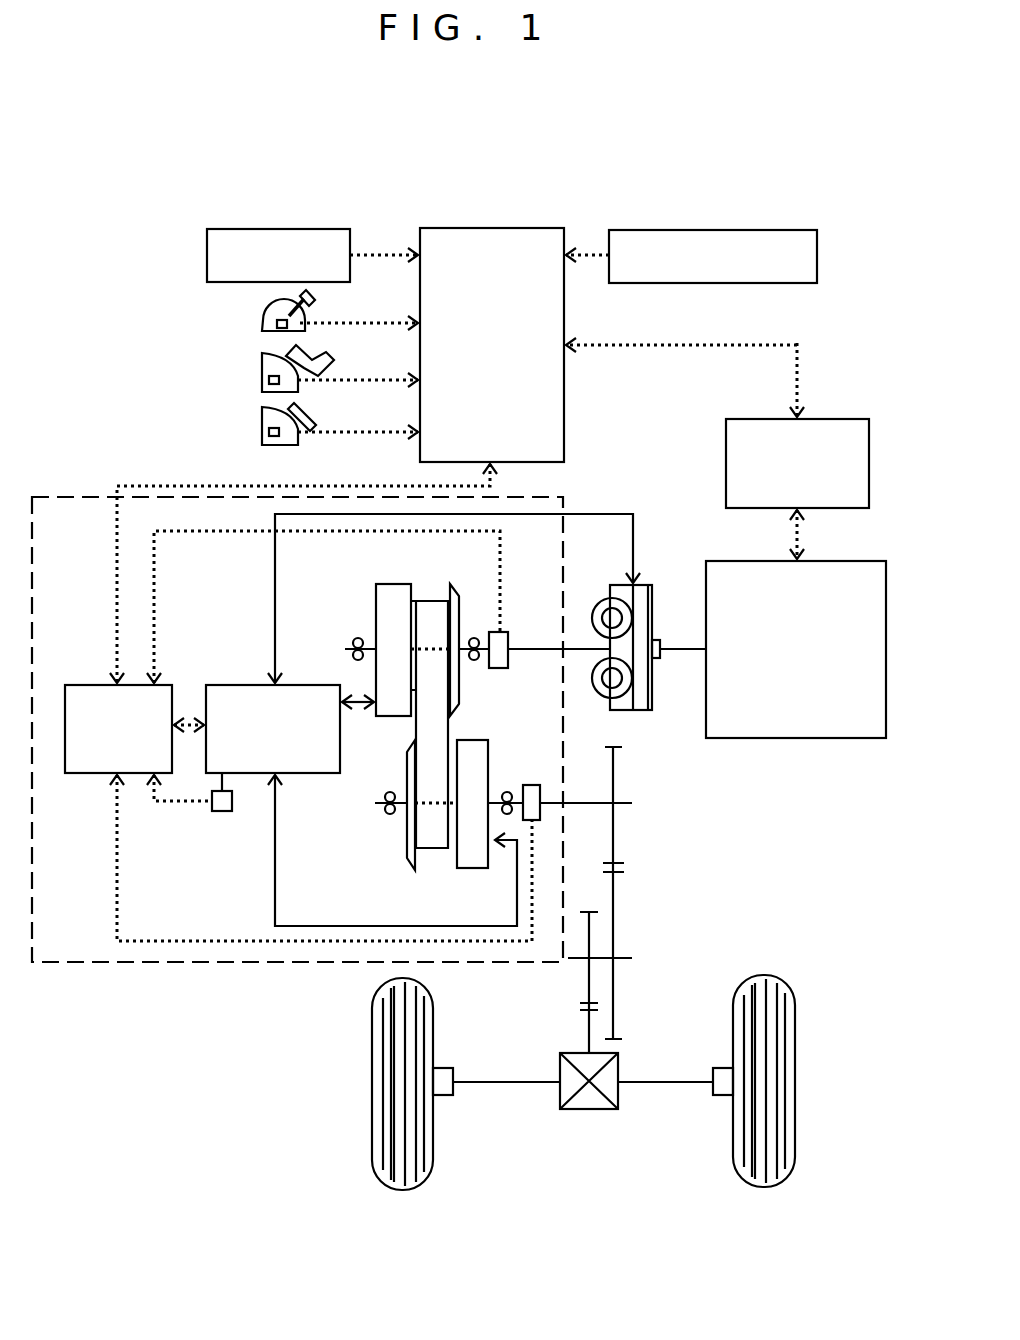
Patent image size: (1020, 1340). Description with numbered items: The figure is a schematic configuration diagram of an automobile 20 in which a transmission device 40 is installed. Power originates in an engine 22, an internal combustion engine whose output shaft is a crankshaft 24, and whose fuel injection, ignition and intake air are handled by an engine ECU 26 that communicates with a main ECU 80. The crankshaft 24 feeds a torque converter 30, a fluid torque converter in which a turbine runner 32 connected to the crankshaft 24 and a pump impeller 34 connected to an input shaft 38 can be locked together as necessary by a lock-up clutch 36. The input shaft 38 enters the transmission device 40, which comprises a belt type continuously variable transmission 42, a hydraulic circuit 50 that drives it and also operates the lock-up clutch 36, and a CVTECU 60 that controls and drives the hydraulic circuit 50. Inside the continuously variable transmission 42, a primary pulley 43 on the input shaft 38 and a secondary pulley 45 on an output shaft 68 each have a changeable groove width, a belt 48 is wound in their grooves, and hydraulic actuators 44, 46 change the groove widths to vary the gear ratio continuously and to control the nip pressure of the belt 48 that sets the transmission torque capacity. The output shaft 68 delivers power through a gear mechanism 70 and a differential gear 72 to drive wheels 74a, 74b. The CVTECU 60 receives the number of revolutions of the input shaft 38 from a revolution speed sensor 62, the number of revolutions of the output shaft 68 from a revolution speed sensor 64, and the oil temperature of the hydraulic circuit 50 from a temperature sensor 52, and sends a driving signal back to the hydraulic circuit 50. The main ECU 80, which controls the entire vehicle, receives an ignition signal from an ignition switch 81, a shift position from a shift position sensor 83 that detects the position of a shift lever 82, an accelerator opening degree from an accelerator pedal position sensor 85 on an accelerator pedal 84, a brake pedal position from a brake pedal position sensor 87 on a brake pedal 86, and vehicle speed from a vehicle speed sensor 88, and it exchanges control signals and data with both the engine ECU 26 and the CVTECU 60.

The automobile 20 is at (125, 185).
The engine 22 is at (800, 738).
The crankshaft 24 is at (683, 648).
The engine ECU 26 is at (840, 419).
The torque converter 30 is at (649, 634).
The turbine runner 32 is at (593, 697).
The pump impeller 34 is at (639, 712).
The lock-up clutch 36 is at (656, 697).
The input shaft 38 is at (577, 648).
The transmission device 40 is at (78, 496).
The belt type continuously variable transmission 42 is at (470, 727).
The primary pulley 43 is at (391, 627).
The hydraulic actuator 44 is at (376, 606).
The secondary pulley 45 is at (428, 864).
The hydraulic actuator 46 is at (470, 740).
The belt 48 is at (416, 722).
The hydraulic circuit 50 is at (243, 685).
The temperature sensor 52 is at (222, 811).
The CVTECU 60 is at (95, 685).
The revolution speed sensor 62 is at (508, 641).
The revolution speed sensor 64 is at (528, 785).
The output shaft 68 is at (597, 803).
The gear mechanism 70 is at (656, 896).
The differential gear 72 is at (590, 1109).
The drive wheel 74a is at (372, 1036).
The drive wheel 74b is at (795, 1040).
The main ECU 80 is at (490, 228).
The ignition switch 81 is at (207, 258).
The shift lever 82 is at (300, 299).
The shift position sensor 83 is at (262, 326).
The accelerator pedal 84 is at (290, 354).
The accelerator pedal position sensor 85 is at (262, 380).
The brake pedal 86 is at (290, 409).
The brake pedal position sensor 87 is at (262, 433).
The vehicle speed sensor 88 is at (817, 256).